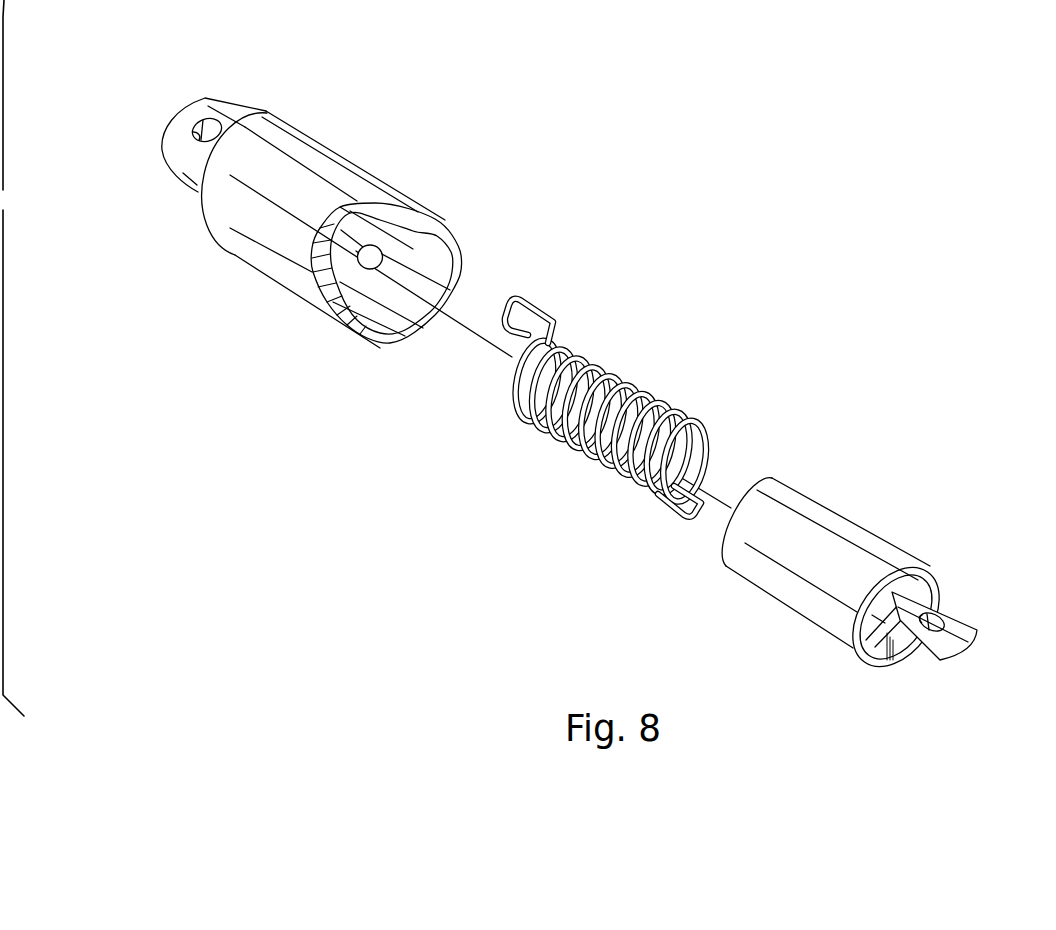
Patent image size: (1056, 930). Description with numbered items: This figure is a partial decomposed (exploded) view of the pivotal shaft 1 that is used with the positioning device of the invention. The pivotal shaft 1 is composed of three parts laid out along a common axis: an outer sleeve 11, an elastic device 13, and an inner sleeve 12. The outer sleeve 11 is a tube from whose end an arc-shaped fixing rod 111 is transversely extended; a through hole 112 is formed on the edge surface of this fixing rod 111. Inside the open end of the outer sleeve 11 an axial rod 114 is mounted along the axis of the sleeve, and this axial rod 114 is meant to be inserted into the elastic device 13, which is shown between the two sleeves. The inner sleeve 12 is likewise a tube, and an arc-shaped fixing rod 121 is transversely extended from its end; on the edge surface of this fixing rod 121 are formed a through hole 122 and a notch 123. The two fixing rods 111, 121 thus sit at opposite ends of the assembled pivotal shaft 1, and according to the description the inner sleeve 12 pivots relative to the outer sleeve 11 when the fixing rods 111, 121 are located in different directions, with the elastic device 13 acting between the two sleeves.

The pivotal shaft 1 is at (703, 338).
The outer sleeve 11 is at (358, 172).
The arc-shaped fixing rod 111 is at (209, 101).
The through hole 112 is at (203, 128).
The axial rod 114 is at (348, 249).
The elastic device 13 is at (603, 453).
The inner sleeve 12 is at (834, 507).
The arc-shaped fixing rod 121 is at (962, 640).
The through hole 122 is at (933, 620).
The notch 123 is at (899, 628).